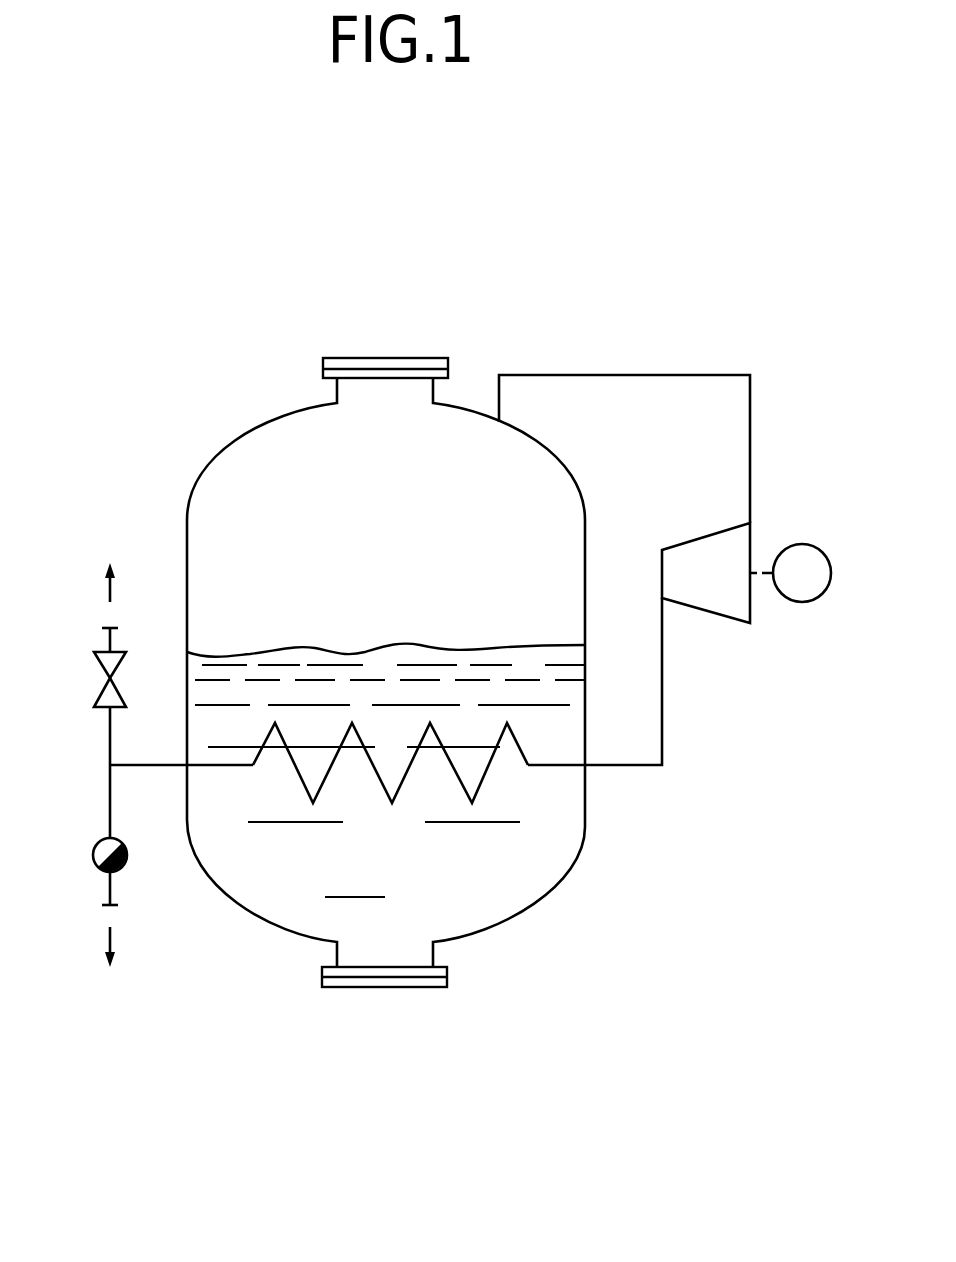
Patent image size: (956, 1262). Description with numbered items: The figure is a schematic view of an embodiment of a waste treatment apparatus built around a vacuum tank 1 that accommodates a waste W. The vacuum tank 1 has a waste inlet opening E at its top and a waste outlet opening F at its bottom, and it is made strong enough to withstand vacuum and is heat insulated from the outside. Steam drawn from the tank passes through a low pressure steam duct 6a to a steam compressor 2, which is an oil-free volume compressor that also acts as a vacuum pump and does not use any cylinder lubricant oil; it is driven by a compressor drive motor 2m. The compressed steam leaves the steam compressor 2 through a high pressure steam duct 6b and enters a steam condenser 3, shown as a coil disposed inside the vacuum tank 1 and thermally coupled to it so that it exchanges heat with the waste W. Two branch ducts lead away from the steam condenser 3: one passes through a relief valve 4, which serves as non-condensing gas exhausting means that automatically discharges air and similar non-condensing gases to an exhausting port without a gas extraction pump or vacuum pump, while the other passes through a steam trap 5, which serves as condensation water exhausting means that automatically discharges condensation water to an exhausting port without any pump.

The vacuum tank 1 is at (202, 462).
The waste inlet opening E is at (390, 345).
The waste outlet opening F is at (398, 997).
The waste W is at (350, 655).
The steam condenser 3 is at (400, 803).
The low pressure steam duct 6a is at (605, 365).
The high pressure steam duct 6b is at (652, 777).
The steam compressor 2 is at (745, 645).
The compressor drive motor 2m is at (805, 545).
The relief valve 4 is at (97, 678).
The steam trap 5 is at (90, 840).